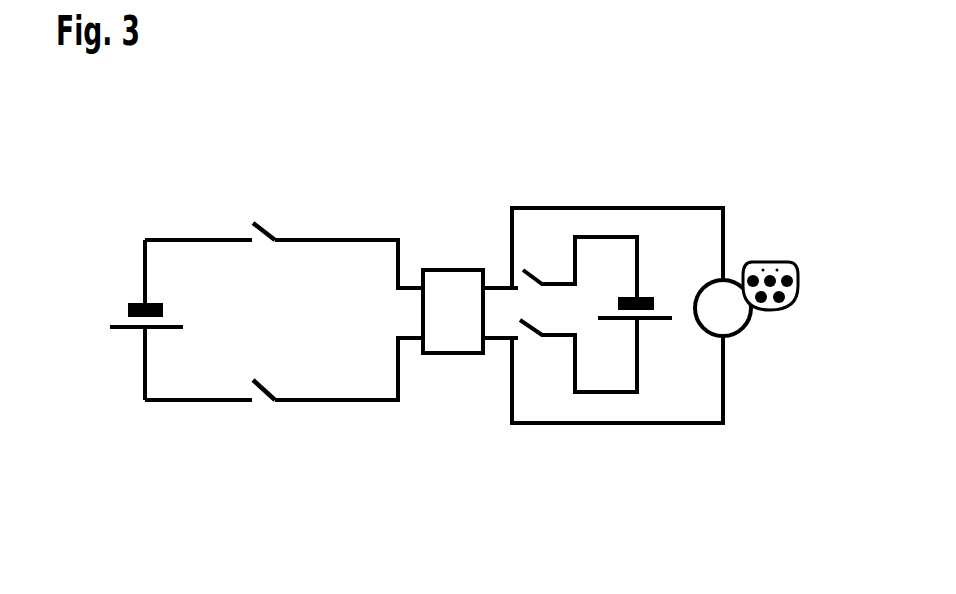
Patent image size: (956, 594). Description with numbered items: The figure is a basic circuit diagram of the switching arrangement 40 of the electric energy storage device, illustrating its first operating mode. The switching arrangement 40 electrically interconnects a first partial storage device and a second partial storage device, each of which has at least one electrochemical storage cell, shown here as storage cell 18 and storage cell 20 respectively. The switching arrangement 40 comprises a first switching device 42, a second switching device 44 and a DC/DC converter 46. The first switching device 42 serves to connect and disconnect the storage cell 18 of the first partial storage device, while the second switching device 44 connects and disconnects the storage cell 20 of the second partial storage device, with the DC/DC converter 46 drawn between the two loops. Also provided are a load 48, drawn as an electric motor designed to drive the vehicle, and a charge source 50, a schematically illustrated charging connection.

The electrochemical storage cell 18 is at (650, 327).
The electrochemical storage cell 20 is at (165, 343).
The switching arrangement 40 is at (458, 147).
The first switching device 42 is at (533, 257).
The second switching device 44 is at (259, 196).
The DC/DC converter 46 is at (452, 353).
The load 48 is at (754, 318).
The charge source 50 is at (775, 262).